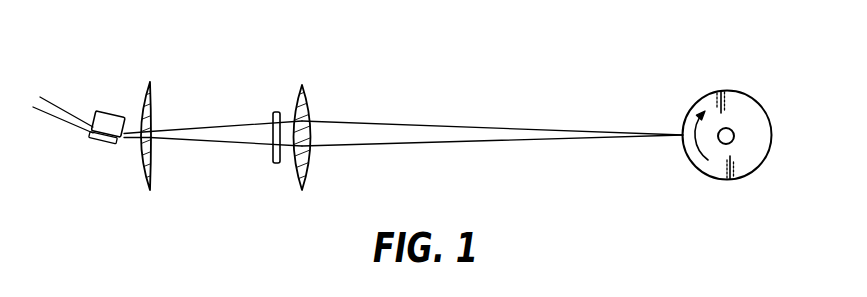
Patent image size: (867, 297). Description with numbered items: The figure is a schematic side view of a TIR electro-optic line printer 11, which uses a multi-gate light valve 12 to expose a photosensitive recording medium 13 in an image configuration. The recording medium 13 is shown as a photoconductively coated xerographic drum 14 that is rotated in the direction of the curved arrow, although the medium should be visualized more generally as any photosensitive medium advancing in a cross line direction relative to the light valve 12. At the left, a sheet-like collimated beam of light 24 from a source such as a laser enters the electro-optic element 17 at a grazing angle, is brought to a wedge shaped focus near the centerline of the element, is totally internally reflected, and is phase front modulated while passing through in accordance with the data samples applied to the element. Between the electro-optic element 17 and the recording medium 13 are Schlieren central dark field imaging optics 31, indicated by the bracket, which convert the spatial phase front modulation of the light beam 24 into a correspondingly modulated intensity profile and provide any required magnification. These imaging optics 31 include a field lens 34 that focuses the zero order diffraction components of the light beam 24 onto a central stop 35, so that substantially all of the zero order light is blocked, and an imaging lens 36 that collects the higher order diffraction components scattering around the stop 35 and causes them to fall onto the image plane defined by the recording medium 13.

The electro-optic line printer 11 is at (410, 104).
The multi-gate light valve 12 is at (113, 104).
The photosensitive recording medium 13 is at (692, 104).
The xerographic drum 14 is at (708, 162).
The electro-optic element 17 is at (93, 121).
The light beam 24 is at (246, 136).
The Schlieren central dark field imaging optics 31 is at (303, 80).
The field lens 34 is at (141, 170).
The central stop 35 is at (276, 164).
The imaging lens 36 is at (310, 168).